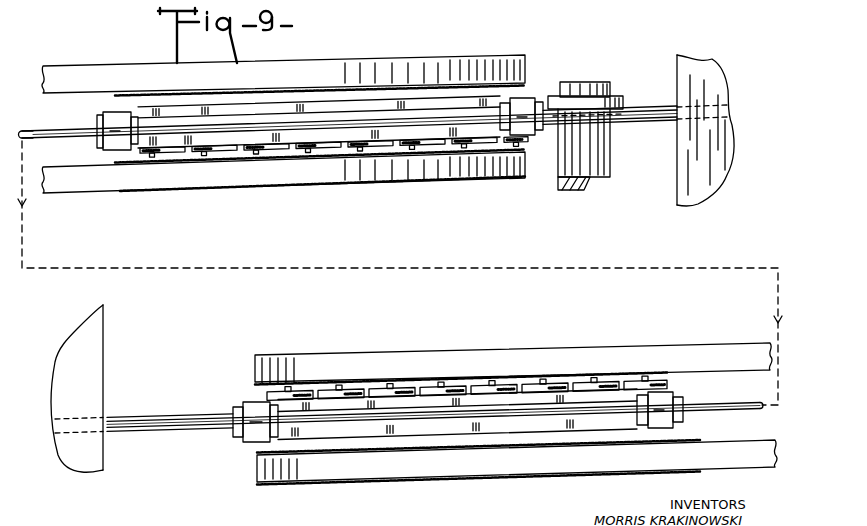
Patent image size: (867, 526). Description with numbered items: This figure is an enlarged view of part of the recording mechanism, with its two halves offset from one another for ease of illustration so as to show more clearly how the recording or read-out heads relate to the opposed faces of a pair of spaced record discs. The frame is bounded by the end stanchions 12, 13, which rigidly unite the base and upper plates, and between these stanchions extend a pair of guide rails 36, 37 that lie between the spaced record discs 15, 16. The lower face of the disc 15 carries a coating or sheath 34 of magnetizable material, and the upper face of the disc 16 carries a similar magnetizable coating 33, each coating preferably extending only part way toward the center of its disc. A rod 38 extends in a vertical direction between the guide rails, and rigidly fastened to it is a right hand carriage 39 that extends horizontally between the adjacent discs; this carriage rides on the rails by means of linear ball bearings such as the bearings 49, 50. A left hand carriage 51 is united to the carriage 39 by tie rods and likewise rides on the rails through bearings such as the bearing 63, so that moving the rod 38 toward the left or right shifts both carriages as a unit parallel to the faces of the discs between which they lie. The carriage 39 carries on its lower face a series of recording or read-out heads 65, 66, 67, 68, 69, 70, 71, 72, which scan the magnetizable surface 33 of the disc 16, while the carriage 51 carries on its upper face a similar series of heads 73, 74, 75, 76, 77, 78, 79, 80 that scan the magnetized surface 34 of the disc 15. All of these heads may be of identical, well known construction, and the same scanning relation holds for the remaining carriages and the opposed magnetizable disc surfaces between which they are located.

The end stanchion 12 is at (705, 80).
The end stanchion 13 is at (97, 348).
The record disc 15 is at (77, 34).
The record disc 16 is at (62, 186).
The magnetizable coating 33 is at (254, 453).
The magnetizable coating 34 is at (184, 197).
The guide rail 36 is at (391, 242).
The guide rail 37 is at (66, 129).
The rod 38 is at (603, 74).
The carriage 39 is at (299, 107).
The linear ball bearing 49 is at (98, 142).
The linear ball bearing 50 is at (540, 97).
The carriage 51 is at (437, 432).
The bearing 63 is at (238, 432).
The recording or read-out head 65 is at (152, 158).
The recording or read-out head 66 is at (204, 157).
The recording or read-out head 67 is at (256, 155).
The recording or read-out head 68 is at (308, 154).
The recording or read-out head 69 is at (360, 152).
The recording or read-out head 70 is at (412, 151).
The recording or read-out head 71 is at (464, 149).
The recording or read-out head 72 is at (516, 148).
The recording or read-out head 73 is at (288, 386).
The recording or read-out head 74 is at (339, 385).
The recording or read-out head 75 is at (390, 384).
The recording or read-out head 76 is at (441, 382).
The recording or read-out head 77 is at (492, 380).
The recording or read-out head 78 is at (543, 379).
The recording or read-out head 79 is at (594, 378).
The recording or read-out head 80 is at (645, 376).